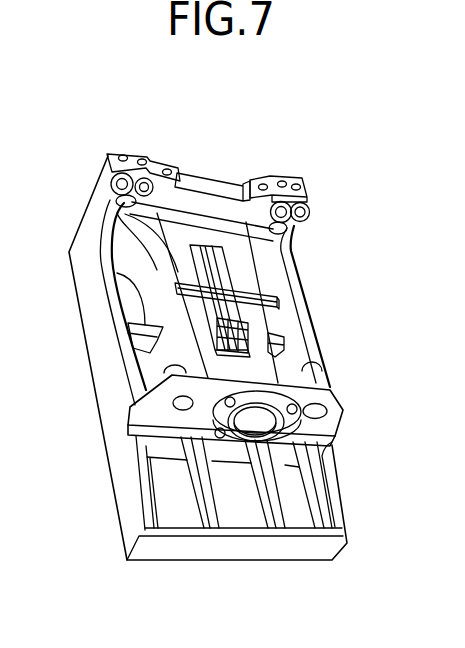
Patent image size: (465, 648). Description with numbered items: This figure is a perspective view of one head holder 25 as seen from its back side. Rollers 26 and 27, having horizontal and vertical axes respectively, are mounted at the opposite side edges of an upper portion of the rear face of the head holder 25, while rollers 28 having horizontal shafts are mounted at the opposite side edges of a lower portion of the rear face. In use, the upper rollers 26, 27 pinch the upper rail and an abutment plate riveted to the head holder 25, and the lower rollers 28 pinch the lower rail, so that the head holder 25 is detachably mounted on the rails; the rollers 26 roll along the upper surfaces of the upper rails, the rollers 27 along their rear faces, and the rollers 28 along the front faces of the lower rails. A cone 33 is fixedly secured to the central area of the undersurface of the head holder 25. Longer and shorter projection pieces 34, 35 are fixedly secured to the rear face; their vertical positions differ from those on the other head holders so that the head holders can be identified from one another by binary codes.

The head holder 25 is at (98, 338).
The rollers 26 is at (117, 202).
The rollers 27 is at (157, 163).
The rollers 28 is at (165, 369).
The cone 33 is at (337, 436).
The longer projection piece 34 is at (278, 297).
The shorter projection piece 35 is at (252, 325).